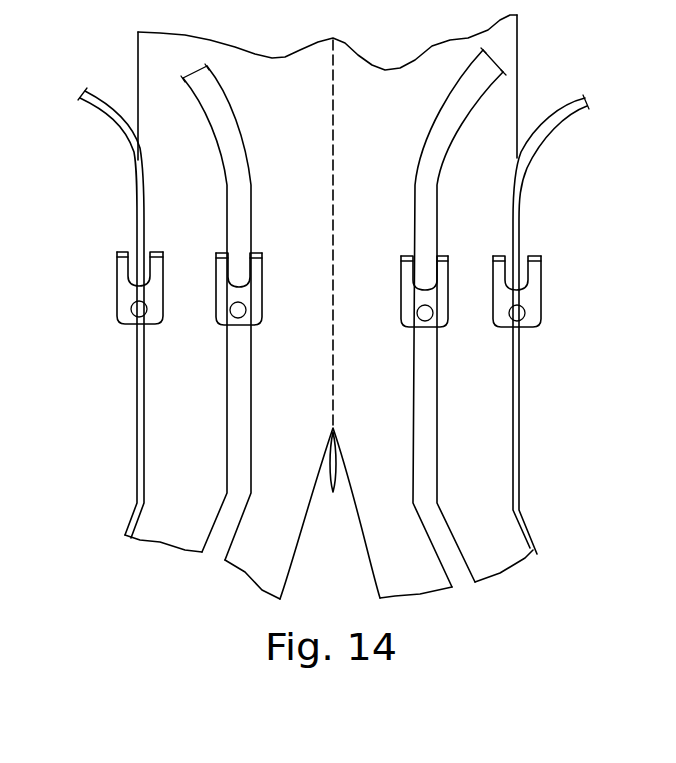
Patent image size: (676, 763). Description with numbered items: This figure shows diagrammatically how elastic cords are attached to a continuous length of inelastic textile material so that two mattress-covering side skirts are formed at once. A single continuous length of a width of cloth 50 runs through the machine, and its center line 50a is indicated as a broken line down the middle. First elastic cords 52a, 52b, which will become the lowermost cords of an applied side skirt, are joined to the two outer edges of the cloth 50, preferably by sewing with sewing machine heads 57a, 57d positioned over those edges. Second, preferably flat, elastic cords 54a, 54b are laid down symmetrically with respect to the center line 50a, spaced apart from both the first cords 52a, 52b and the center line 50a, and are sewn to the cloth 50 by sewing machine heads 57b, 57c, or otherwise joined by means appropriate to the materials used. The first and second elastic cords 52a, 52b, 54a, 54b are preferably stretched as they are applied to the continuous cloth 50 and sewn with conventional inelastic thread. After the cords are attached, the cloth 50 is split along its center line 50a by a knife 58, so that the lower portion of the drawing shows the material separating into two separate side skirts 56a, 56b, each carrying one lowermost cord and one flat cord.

The cloth 50 is at (285, 57).
The center line 50a is at (335, 183).
The first elastic cord 52a is at (105, 110).
The first elastic cord 52b is at (557, 120).
The second elastic cord 54a is at (208, 102).
The second elastic cord 54b is at (438, 110).
The side skirt 56a is at (164, 507).
The side skirt 56b is at (490, 545).
The sewing machine head 57a is at (127, 290).
The sewing machine head 57b is at (227, 298).
The sewing machine head 57c is at (409, 303).
The sewing machine head 57d is at (502, 305).
The knife 58 is at (336, 468).